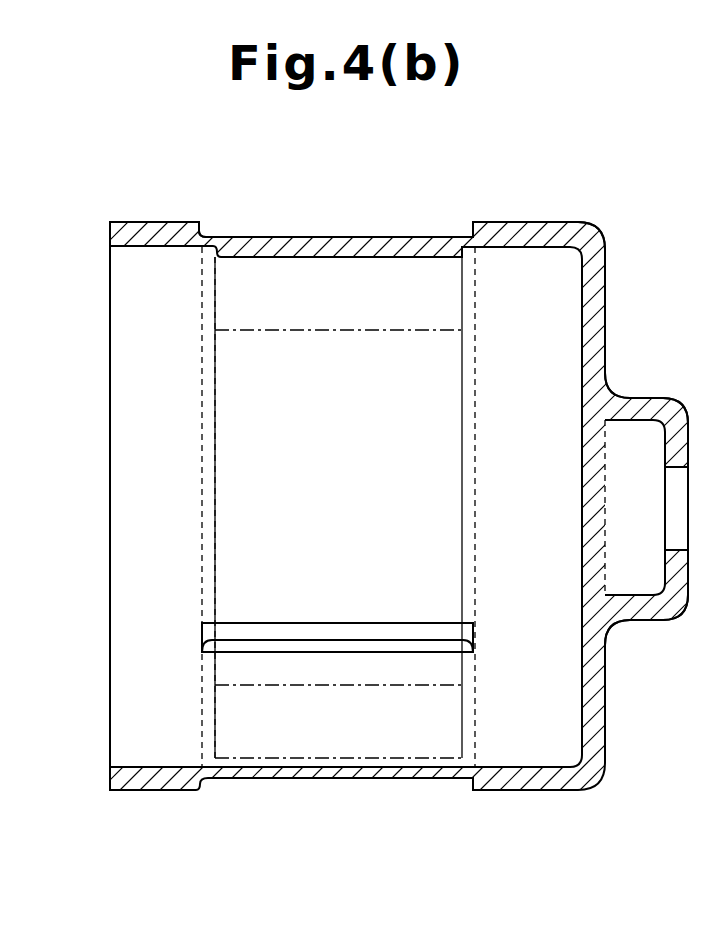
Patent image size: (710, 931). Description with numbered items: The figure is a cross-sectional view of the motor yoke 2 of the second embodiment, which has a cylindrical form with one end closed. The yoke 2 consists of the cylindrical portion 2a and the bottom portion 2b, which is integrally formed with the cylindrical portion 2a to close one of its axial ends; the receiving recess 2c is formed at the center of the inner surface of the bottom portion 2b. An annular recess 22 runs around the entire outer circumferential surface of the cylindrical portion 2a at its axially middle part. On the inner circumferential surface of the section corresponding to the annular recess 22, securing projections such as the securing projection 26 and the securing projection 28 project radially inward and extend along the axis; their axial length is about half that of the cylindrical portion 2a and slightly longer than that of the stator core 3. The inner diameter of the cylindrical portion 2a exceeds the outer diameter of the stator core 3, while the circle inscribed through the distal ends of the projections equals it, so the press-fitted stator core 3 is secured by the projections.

The motor yoke 2 is at (176, 790).
The cylindrical portion 2a is at (533, 223).
The bottom portion 2b is at (605, 312).
The receiving recess 2c is at (646, 591).
The annular recess 22 is at (212, 236).
The securing projection 26 is at (340, 245).
The securing projection 28 is at (340, 622).
The stator core 3 is at (215, 522).